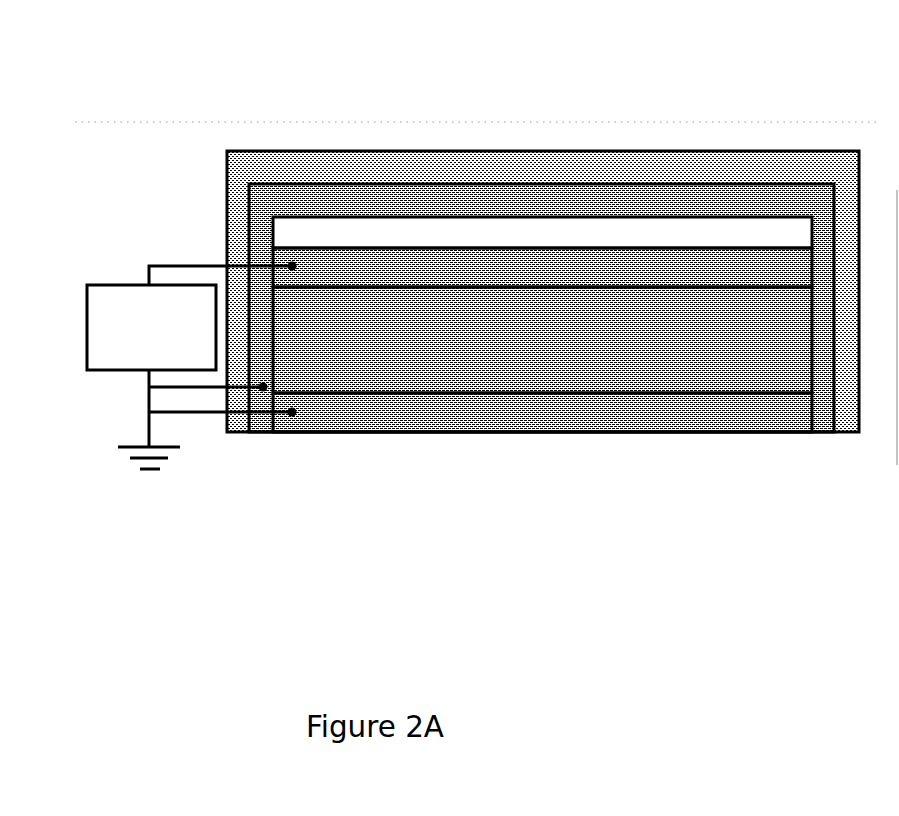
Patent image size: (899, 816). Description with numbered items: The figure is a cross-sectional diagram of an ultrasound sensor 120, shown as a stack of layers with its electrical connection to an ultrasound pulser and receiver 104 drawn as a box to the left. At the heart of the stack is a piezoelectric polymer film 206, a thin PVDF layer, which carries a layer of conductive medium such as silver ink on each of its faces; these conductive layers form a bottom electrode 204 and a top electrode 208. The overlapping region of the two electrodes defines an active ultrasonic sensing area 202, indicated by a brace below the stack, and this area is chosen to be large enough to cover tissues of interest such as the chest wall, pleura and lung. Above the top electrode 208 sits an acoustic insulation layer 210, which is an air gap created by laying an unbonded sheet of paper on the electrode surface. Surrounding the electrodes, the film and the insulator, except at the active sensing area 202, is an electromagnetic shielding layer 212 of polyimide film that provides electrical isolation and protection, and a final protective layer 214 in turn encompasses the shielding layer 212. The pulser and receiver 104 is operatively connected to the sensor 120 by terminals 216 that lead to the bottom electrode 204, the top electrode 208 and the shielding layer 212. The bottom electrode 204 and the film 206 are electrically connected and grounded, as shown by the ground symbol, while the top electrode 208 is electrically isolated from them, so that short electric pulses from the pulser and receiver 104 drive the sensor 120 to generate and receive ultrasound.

The ultrasound sensor 120 is at (162, 109).
The ultrasound pulser and receiver 104 is at (192, 366).
The active ultrasonic sensing area 202 is at (543, 352).
The bottom electrode 204 is at (814, 447).
The piezoelectric polymer film 206 is at (542, 340).
The top electrode 208 is at (542, 267).
The acoustic insulation layer 210 is at (542, 235).
The electromagnetic shielding layer 212 is at (541, 308).
The protective layer 214 is at (543, 291).
The terminals 216 is at (291, 414).